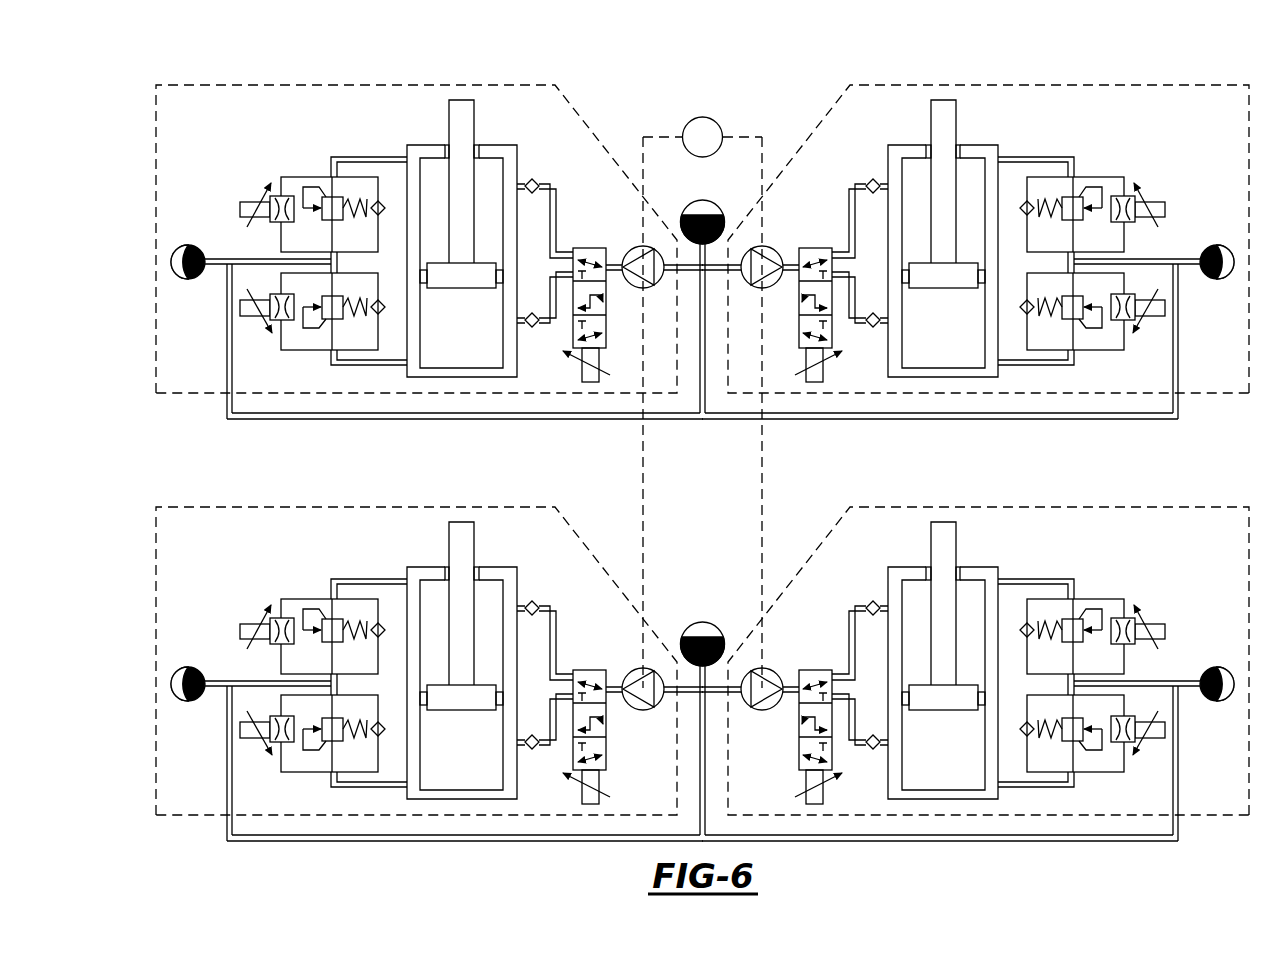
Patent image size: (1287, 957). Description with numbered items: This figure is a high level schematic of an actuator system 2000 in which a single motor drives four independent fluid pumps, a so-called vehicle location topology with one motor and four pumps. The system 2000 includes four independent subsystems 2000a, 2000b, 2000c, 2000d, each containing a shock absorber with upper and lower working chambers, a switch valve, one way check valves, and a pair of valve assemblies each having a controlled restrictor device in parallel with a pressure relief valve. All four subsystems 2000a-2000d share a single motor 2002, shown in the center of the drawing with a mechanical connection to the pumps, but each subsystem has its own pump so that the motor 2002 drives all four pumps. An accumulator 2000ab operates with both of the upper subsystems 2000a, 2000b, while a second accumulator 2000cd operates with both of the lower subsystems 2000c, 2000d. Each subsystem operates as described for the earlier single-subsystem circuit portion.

The system 2000 is at (822, 96).
The first subsystem 2000a is at (292, 85).
The second subsystem 2000b is at (1117, 85).
The third subsystem 2000c is at (192, 815).
The fourth subsystem 2000d is at (1213, 815).
The accumulator 2000ab is at (722, 183).
The accumulator 2000cd is at (703, 620).
The motor 2002 is at (723, 132).